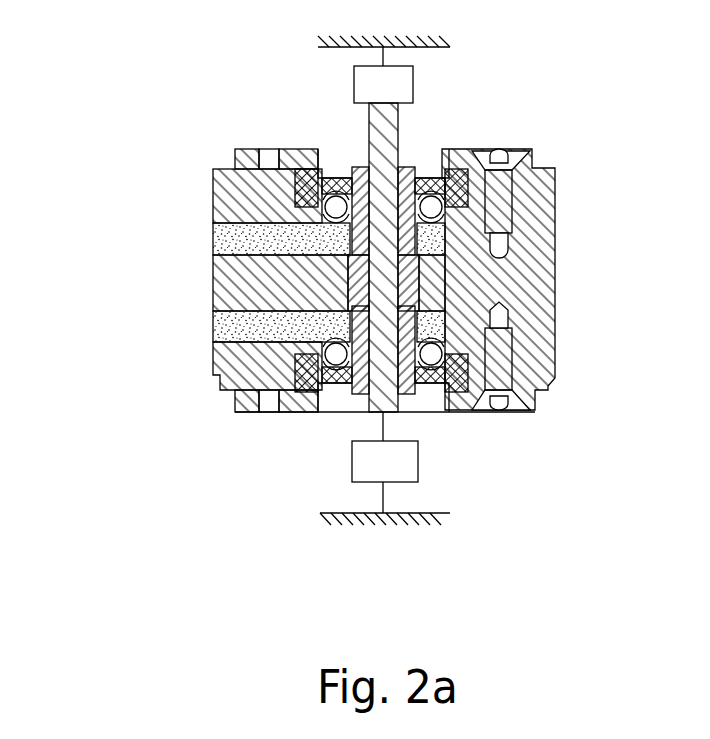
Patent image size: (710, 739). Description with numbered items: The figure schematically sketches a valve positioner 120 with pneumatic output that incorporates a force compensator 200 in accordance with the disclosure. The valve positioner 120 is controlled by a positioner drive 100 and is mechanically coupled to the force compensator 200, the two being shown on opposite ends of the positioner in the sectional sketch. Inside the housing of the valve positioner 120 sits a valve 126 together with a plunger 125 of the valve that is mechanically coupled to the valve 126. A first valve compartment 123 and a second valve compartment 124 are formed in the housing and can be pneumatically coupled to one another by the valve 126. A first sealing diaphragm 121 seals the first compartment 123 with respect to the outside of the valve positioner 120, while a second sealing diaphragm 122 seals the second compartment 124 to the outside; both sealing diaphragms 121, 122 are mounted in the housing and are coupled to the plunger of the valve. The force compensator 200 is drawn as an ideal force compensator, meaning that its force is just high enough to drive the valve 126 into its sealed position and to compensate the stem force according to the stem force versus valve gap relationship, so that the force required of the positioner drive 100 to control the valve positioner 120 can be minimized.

The positioner drive 100 is at (352, 468).
The valve positioner with pneumatic output 120 is at (553, 140).
The first sealing diaphragm 121 is at (305, 185).
The second sealing diaphragm 122 is at (286, 412).
The first valve compartment 123 is at (230, 239).
The second valve compartment 124 is at (233, 328).
The plunger 125 is at (418, 412).
The valve 126 is at (213, 268).
The force compensator 200 is at (347, 85).